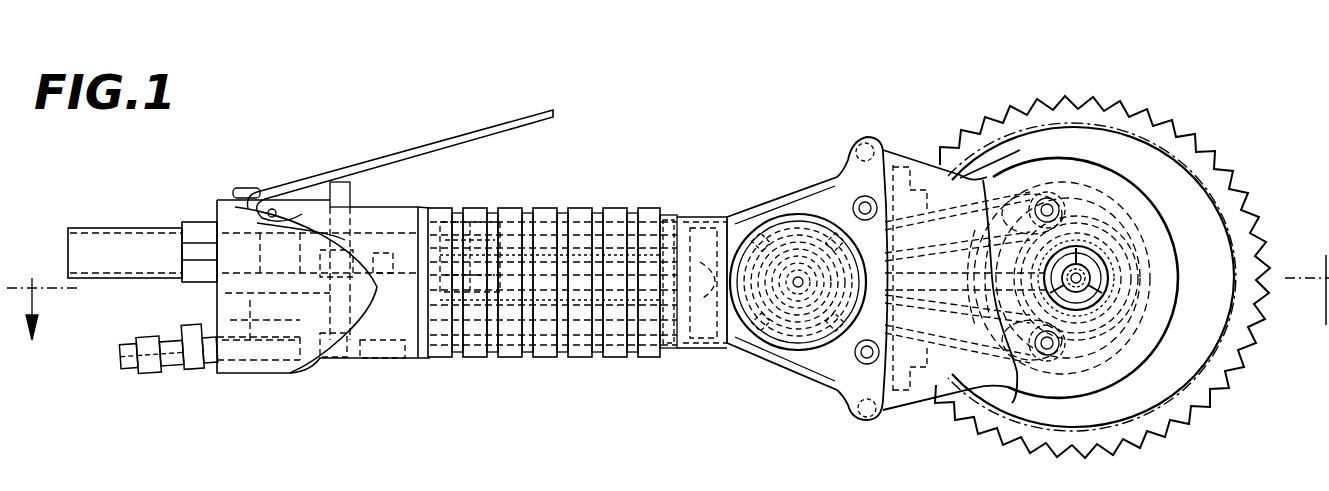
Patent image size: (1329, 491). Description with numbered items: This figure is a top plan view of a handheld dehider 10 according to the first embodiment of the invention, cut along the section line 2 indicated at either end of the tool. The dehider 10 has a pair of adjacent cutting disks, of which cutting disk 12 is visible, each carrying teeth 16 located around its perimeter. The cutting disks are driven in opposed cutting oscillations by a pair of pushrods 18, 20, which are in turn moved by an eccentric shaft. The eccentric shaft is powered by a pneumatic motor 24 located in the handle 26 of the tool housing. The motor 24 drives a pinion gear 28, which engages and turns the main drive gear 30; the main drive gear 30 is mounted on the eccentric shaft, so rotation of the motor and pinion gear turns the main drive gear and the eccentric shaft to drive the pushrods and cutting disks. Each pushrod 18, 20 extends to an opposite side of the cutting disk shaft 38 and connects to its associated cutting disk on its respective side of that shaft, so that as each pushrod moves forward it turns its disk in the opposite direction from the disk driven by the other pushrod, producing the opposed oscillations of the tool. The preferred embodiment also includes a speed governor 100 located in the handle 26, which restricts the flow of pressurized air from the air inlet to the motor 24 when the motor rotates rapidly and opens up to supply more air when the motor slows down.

The section line 2- 2 is at (668, 297).
The handheld dehider 10 is at (655, 168).
The cutting disk 12 is at (1219, 275).
The teeth 16 is at (1200, 143).
The pushrod 18 is at (957, 180).
The pushrod 20 is at (1012, 403).
The pneumatic motor 24 is at (597, 357).
The handle 26 is at (513, 357).
The pinion gear 28 is at (733, 347).
The main drive gear 30 is at (730, 218).
The cutting disk shaft 38 is at (1083, 270).
The speed governor 100 is at (463, 223).